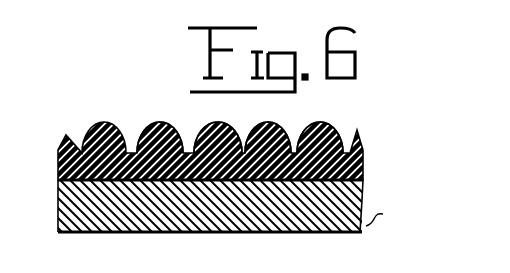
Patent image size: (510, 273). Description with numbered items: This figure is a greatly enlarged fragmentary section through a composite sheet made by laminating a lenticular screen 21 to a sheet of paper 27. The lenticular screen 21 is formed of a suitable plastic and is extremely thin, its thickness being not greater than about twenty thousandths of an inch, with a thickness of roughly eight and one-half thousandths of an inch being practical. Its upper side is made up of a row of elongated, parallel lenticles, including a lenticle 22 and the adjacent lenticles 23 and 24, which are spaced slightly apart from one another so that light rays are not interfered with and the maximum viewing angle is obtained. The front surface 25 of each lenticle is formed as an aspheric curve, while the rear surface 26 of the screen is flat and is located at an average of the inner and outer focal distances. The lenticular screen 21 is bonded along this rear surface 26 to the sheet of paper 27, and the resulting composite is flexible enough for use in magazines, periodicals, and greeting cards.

The lenticular screen 21 is at (369, 155).
The lenticle 22 is at (219, 122).
The lenticle 23 is at (160, 122).
The lenticle 24 is at (286, 120).
The front surface 25 is at (290, 130).
The rear surface 26 is at (364, 188).
The sheet of paper 27 is at (68, 212).